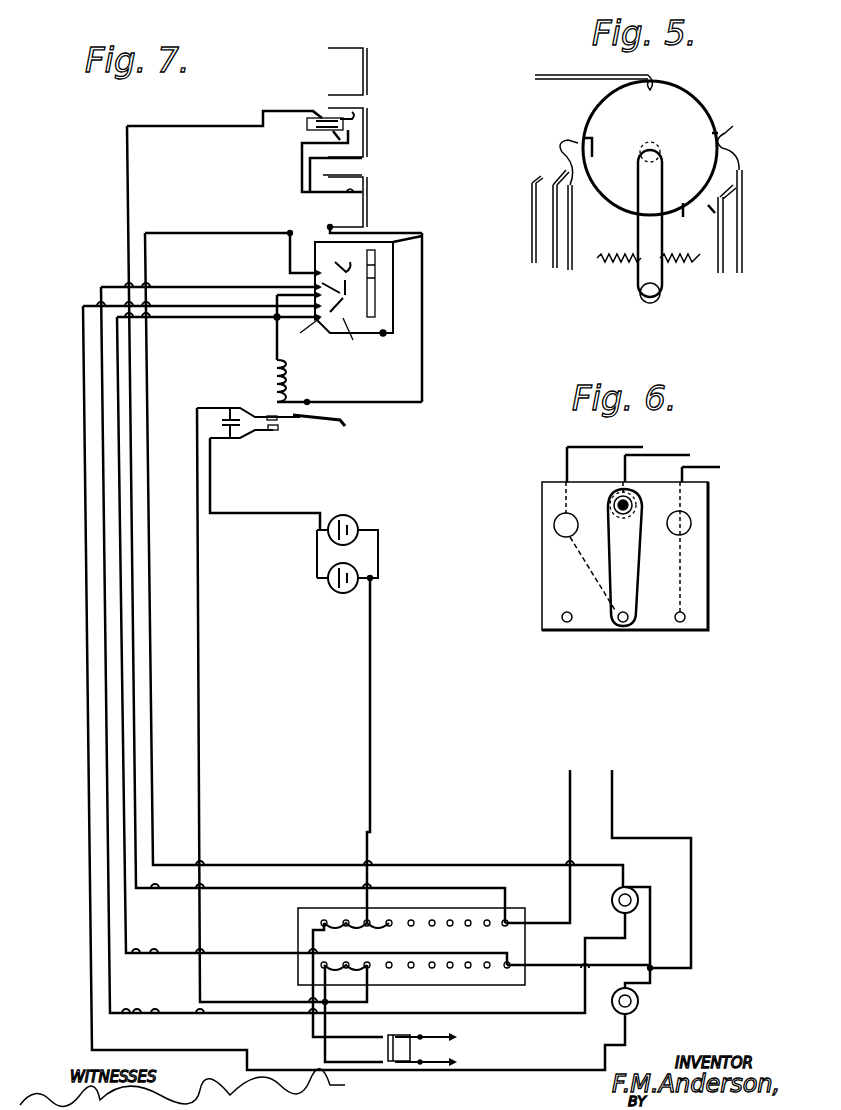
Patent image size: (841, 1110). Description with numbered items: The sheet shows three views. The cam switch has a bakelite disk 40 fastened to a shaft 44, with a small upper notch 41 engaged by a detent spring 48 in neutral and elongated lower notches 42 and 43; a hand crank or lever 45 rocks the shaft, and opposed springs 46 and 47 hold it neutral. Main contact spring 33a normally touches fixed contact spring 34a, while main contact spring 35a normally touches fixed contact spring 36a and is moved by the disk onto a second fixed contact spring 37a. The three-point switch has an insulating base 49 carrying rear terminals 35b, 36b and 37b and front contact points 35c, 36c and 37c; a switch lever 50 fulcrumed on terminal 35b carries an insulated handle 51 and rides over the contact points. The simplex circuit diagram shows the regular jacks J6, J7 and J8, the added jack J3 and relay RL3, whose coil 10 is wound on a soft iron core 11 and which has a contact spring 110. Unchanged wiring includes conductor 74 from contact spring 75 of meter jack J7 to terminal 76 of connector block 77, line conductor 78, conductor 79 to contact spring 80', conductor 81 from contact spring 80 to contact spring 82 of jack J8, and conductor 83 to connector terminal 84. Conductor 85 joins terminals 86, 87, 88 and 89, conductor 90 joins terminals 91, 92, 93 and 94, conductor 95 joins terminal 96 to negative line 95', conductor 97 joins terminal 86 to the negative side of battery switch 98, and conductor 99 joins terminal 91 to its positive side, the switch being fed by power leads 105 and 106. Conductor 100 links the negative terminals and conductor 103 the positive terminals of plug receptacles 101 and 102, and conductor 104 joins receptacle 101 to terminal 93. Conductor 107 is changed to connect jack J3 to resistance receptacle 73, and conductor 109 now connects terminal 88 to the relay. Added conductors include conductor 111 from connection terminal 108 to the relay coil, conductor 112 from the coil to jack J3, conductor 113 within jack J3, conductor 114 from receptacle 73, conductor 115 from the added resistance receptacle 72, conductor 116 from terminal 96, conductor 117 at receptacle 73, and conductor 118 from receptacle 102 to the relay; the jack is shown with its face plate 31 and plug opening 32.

In FIG. 7, the conductor 74 is at (245, 127).
In FIG. 7, the conductor 107 is at (213, 233).
In FIG. 7, the conductor 114 is at (200, 287).
In FIG. 7, the conductor 115 is at (215, 306).
In FIG. 7, the conductor 116 is at (183, 317).
In FIG. 7, the conductor 112 is at (277, 338).
In FIG. 7, the connection terminal 108 is at (375, 219).
In FIG. 7, the conductor 111 is at (422, 376).
In FIG. 7, the magnetizing coil 10 is at (286, 374).
In FIG. 7, the conductor 79 is at (308, 126).
In FIG. 7, the contact spring 75 is at (328, 118).
In FIG. 7, the contact spring 80' is at (373, 110).
In FIG. 7, the contact spring 80 is at (343, 143).
In FIG. 7, the conductor 81 is at (302, 162).
In FIG. 7, the conductor 83 is at (302, 185).
In FIG. 7, the connector terminal 84 is at (372, 160).
In FIG. 7, the contact spring 82 is at (344, 200).
In FIG. 7, the jack switch J6 is at (368, 72).
In FIG. 7, the meter jack J7 is at (368, 148).
In FIG. 7, the jack switch J8 is at (368, 218).
In FIG. 7, the face plate 31 is at (378, 316).
In FIG. 7, the opening 32 is at (378, 265).
In FIG. 7, the conductor 113 is at (393, 288).
In FIG. 7, the added jack switch J3 is at (391, 341).
In FIG. 7, the contact spring 110 is at (215, 408).
In FIG. 7, the conductor 109 is at (200, 795).
In FIG. 7, the soft iron core 11 is at (340, 422).
In FIG. 7, the relay RL3 is at (241, 439).
In FIG. 7, the conductor 118 is at (258, 513).
In FIG. 7, the conductor 103 is at (378, 552).
In FIG. 7, the plug receptacle 102 is at (350, 517).
In FIG. 7, the plug receptacle 101 is at (343, 594).
In FIG. 7, the conductor 100 is at (318, 566).
In FIG. 7, the conductor 104 is at (370, 788).
In FIG. 7, the line conductor 78 is at (570, 812).
In FIG. 7, the negative line 95' is at (649, 860).
In FIG. 7, the terminal 76 is at (510, 918).
In FIG. 7, the resistance receptacle 73 is at (612, 905).
In FIG. 7, the conductor 117 is at (650, 926).
In FIG. 7, the resistance receptacle 72 is at (640, 1001).
In FIG. 7, the conductor 95 is at (578, 953).
In FIG. 7, the connector block 77 is at (463, 975).
In FIG. 7, the conductor 90 is at (356, 934).
In FIG. 7, the conductor 85 is at (367, 962).
In FIG. 7, the terminal 91 is at (324, 920).
In FIG. 7, the terminal 92 is at (346, 920).
In FIG. 7, the terminal 93 is at (368, 920).
In FIG. 7, the terminal 94 is at (390, 920).
In FIG. 7, the terminal 86 is at (335, 973).
In FIG. 7, the terminal 87 is at (348, 981).
In FIG. 7, the terminal 88 is at (368, 968).
In FIG. 7, the terminal 89 is at (389, 968).
In FIG. 7, the terminal 96 is at (507, 968).
In FIG. 7, the conductor 99 is at (313, 1027).
In FIG. 7, the conductor 97 is at (318, 1040).
In FIG. 7, the battery switch 98 is at (395, 1064).
In FIG. 7, the power lead 105 is at (447, 1038).
In FIG. 7, the power lead 106 is at (447, 1063).
In FIG. 5, the disk 40 is at (684, 116).
In FIG. 5, the detent spring 48 is at (558, 75).
In FIG. 5, the notch 41 is at (646, 86).
In FIG. 5, the shaft 44 is at (649, 141).
In FIG. 5, the hand crank or lever 45 is at (655, 301).
In FIG. 5, the spring 46 is at (606, 262).
In FIG. 5, the spring 47 is at (690, 262).
In FIG. 5, the elongated notch 42 is at (610, 204).
In FIG. 5, the elongated notch 43 is at (715, 183).
In FIG. 5, the fixed contact spring 37a is at (532, 216).
In FIG. 5, the main contact spring 35a is at (555, 262).
In FIG. 5, the fixed contact spring 36a is at (577, 272).
In FIG. 5, the main contact spring 33a is at (742, 220).
In FIG. 5, the fixed contact spring 34a is at (725, 248).
In FIG. 6, the base 49 is at (553, 578).
In FIG. 6, the contact point 36c is at (554, 526).
In FIG. 6, the contact point 35c is at (613, 495).
In FIG. 6, the contact point 37c is at (691, 524).
In FIG. 6, the switch lever 50 is at (632, 574).
In FIG. 6, the insulated handle 51 is at (612, 503).
In FIG. 6, the terminal 36b is at (563, 623).
In FIG. 6, the terminal 35b is at (623, 623).
In FIG. 6, the terminal 37b is at (680, 623).